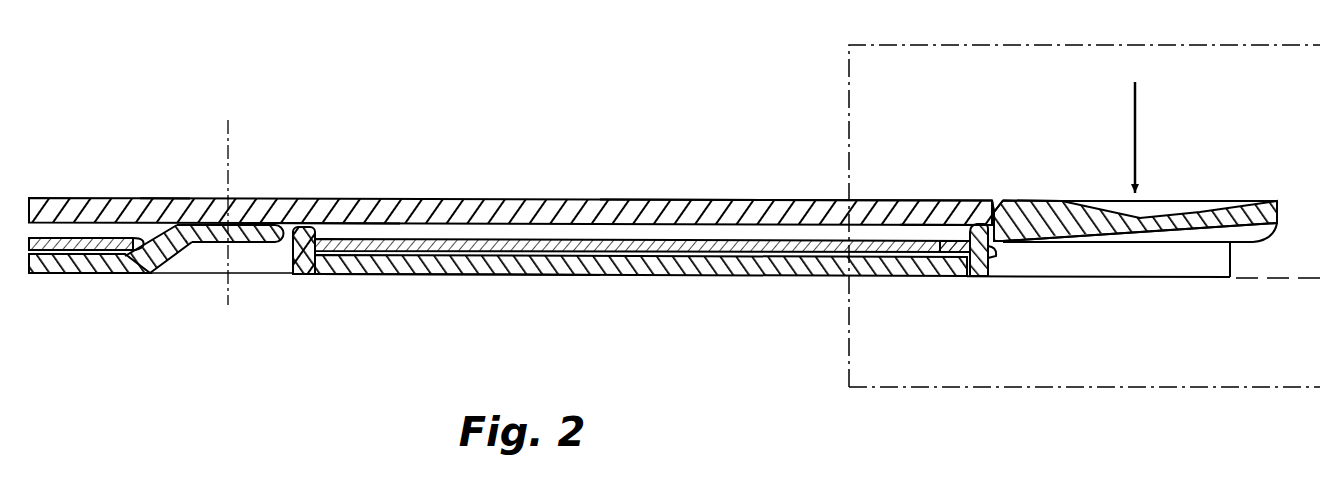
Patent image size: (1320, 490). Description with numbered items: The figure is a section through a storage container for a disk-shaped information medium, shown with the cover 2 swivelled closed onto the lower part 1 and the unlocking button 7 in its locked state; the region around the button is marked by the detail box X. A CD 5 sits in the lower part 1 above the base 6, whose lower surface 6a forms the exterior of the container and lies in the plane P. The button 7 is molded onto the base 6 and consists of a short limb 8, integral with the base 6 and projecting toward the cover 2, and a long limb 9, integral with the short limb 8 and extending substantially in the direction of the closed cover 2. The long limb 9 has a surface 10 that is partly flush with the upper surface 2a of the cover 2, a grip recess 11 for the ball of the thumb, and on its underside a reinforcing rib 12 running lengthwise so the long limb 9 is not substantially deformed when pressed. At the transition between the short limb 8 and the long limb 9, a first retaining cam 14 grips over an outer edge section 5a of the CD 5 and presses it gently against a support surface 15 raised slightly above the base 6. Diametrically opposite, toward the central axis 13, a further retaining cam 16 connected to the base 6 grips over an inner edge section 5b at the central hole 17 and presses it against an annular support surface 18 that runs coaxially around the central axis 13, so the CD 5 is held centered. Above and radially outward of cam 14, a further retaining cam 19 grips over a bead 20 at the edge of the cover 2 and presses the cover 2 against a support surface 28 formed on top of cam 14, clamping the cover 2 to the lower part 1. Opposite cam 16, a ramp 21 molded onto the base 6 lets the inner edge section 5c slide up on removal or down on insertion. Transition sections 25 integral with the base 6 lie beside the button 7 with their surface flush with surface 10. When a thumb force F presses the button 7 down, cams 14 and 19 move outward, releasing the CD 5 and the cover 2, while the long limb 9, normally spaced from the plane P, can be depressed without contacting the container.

The lower part 1 is at (678, 319).
The cover 2 is at (622, 195).
The upper surface of the cover 2a is at (738, 199).
The CD 5 is at (420, 240).
The outer edge section of the CD 5a is at (902, 258).
The inner edge section of the CD 5b is at (282, 273).
The inner edge section of the CD 5c is at (175, 258).
The base 6 is at (541, 275).
The lower surface of the base 6a is at (428, 275).
The unlocking button 7 is at (1157, 195).
The short limb 8 is at (991, 264).
The long limb 9 is at (1141, 232).
The surface of the long limb 10 is at (1040, 222).
The grip recess 11 is at (1178, 204).
The reinforcing rib 12 is at (1252, 235).
The central axis 13 is at (229, 199).
The first retaining cam 14 is at (937, 224).
The support surface 15 is at (966, 270).
The further retaining cam 16 is at (329, 222).
The central hole 17 is at (287, 226).
The further support surface 18 is at (130, 258).
The further retaining cam 19 is at (1015, 204).
The bead 20 is at (986, 204).
The ramp 21 is at (163, 222).
The transition sections 25 is at (1197, 266).
The support surface 28 is at (995, 252).
The force arrow F is at (1133, 86).
The plane P is at (1278, 258).
The detail region X is at (902, 388).